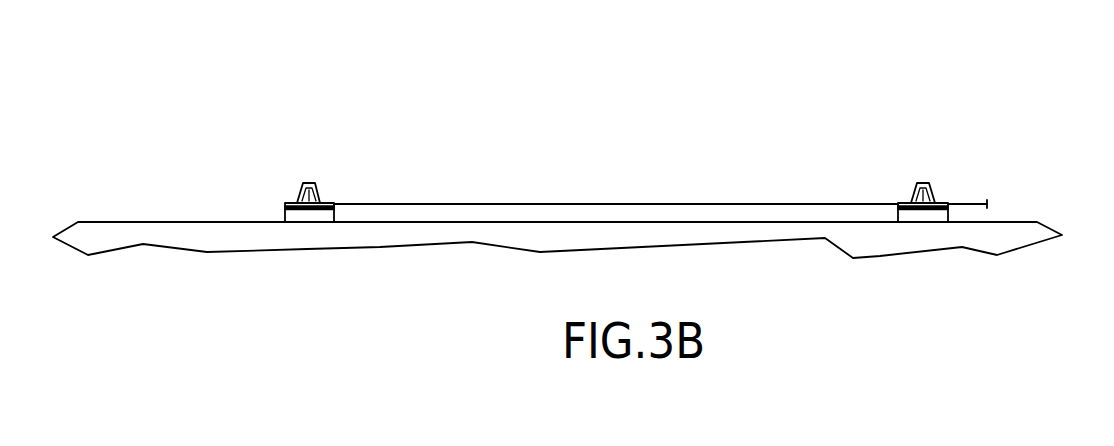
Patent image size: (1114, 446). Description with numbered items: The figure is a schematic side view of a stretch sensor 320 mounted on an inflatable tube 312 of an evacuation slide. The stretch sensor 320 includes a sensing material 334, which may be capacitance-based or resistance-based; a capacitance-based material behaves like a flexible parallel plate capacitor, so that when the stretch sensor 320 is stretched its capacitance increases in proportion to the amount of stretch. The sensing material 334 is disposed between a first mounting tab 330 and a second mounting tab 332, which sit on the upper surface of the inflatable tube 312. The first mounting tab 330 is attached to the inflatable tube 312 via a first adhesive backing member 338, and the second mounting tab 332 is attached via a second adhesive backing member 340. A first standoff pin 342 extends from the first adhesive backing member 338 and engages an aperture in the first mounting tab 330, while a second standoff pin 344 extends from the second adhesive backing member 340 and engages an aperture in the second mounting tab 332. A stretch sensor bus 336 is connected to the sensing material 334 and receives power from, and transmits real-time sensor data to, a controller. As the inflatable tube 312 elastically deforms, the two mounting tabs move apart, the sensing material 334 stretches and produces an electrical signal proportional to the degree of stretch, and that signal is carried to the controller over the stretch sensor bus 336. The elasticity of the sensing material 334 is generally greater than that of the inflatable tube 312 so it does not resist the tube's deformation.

The stretch sensor 320 is at (241, 103).
The inflatable tube 312 is at (205, 240).
The first mounting tab 330 is at (283, 205).
The second mounting tab 332 is at (940, 200).
The sensing material 334 is at (563, 205).
The stretch sensor bus 336 is at (968, 202).
The first adhesive backing member 338 is at (310, 213).
The second adhesive backing member 340 is at (920, 213).
The first standoff pin 342 is at (317, 187).
The second standoff pin 344 is at (922, 185).